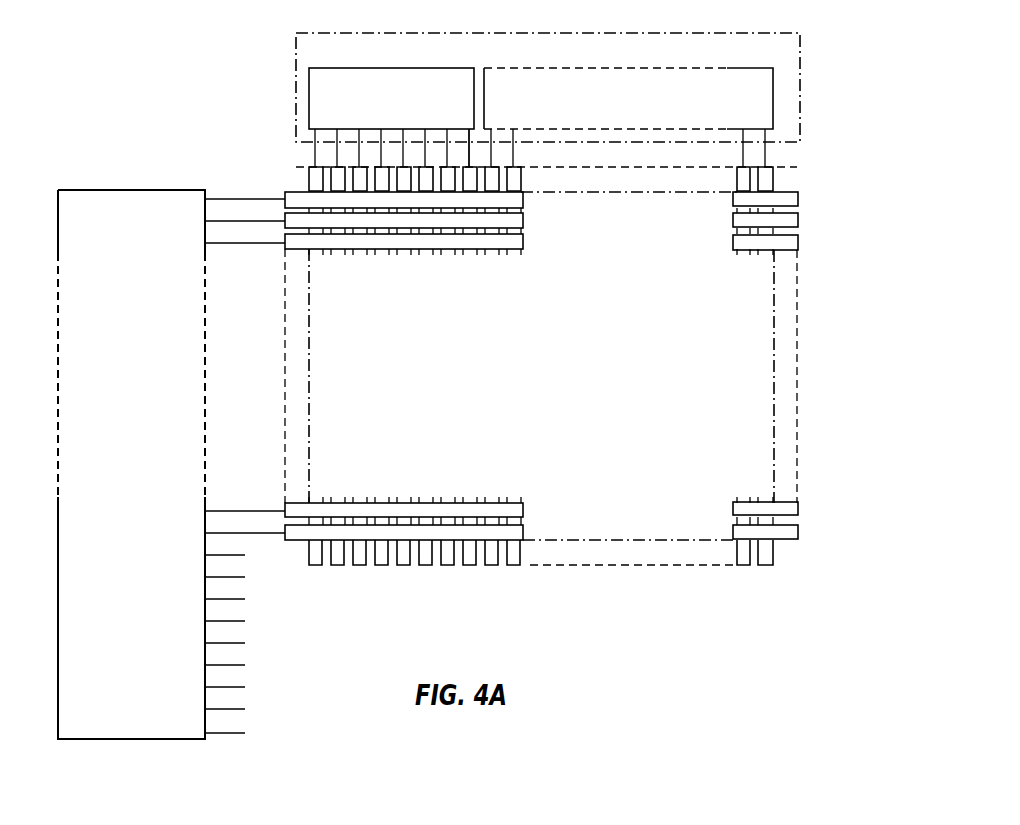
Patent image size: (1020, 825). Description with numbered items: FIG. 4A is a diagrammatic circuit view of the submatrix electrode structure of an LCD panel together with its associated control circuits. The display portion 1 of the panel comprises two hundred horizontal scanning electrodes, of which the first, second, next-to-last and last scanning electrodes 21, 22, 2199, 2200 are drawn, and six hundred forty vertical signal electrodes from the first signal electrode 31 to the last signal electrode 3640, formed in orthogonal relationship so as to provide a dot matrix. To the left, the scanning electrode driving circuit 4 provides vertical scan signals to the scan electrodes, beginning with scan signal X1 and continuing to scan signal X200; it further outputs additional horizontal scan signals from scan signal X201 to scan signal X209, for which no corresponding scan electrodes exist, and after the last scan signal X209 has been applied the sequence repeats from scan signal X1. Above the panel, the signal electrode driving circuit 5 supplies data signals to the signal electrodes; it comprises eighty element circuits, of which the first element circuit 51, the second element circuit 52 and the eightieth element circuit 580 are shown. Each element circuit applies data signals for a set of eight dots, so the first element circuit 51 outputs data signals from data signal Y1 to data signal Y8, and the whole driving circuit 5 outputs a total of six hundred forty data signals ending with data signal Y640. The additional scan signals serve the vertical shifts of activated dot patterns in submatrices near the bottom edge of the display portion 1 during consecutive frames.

The display portion 1 is at (633, 540).
The scanning electrode driving circuit 4 is at (58, 680).
The signal electrode driving circuit 5 is at (296, 33).
The first element circuit 51 is at (309, 96).
The second element circuit 52 is at (485, 68).
The eightieth element circuit 580 is at (773, 97).
The data signal Y1 is at (315, 153).
The data signal Y8 is at (469, 138).
The data signal Y640 is at (765, 155).
The signal electrode 31 is at (309, 178).
The signal electrode 3640 is at (773, 172).
The scanning electrode 21 is at (798, 198).
The scanning electrode 22 is at (798, 220).
The scanning electrode 2199 is at (798, 510).
The scanning electrode 2200 is at (798, 532).
The scan signal X1 is at (242, 198).
The scan signal X200 is at (270, 533).
The scan signal X201 is at (245, 555).
The scan signal X209 is at (245, 733).